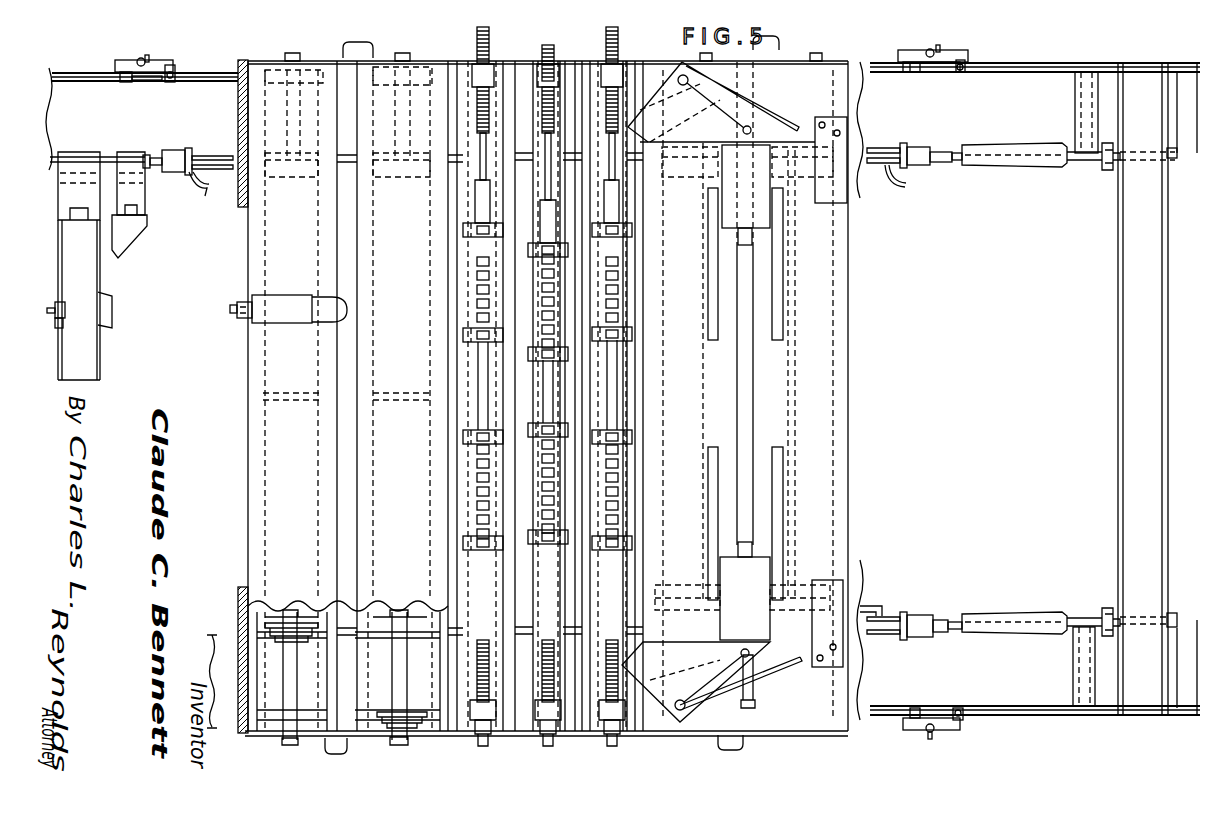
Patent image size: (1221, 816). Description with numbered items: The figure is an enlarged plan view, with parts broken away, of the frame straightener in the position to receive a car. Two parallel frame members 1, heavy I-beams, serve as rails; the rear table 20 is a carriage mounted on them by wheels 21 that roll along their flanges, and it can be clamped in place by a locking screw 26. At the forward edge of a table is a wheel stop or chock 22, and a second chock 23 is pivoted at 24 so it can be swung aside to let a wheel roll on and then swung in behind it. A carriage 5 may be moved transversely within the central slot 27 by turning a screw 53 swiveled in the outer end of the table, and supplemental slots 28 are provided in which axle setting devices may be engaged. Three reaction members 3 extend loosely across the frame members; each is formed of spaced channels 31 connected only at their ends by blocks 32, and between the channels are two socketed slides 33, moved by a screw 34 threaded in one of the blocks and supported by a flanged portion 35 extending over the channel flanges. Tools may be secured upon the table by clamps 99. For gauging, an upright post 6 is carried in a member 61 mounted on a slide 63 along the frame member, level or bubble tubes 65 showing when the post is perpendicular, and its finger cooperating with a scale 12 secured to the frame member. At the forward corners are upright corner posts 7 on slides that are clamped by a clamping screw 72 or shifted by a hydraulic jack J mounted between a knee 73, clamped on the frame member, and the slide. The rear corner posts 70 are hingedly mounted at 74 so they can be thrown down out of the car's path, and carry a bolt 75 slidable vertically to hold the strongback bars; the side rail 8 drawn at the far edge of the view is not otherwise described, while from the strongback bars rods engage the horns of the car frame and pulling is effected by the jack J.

The frame member 1 is at (60, 96).
The reaction member 3 is at (455, 367).
The carriage 5 is at (760, 211).
The upright post 6 is at (142, 58).
The corner post 7 is at (1078, 161).
The side rail 8 is at (1122, 471).
The scale 12 is at (1058, 70).
The rear table 20 is at (360, 370).
The wheel 21 is at (306, 192).
The wheel stop or chock 22 is at (848, 186).
The second chock 23 is at (652, 76).
The pivot 24 is at (742, 131).
The locking screw 26 is at (358, 48).
The central slot 27 is at (345, 441).
The supplemental slot 28 is at (778, 293).
The channel 31 is at (505, 400).
The block 32 is at (556, 62).
The socketed slide 33 is at (472, 281).
The screw 34 is at (492, 48).
The flanged portion 35 is at (465, 336).
The screw 53 is at (753, 702).
The member 61 is at (123, 63).
The slide 63 is at (140, 78).
The level or bubble tube 65 is at (160, 60).
The rear corner post 70 is at (82, 270).
The clamping screw 72 is at (198, 186).
The knee 73 is at (210, 159).
The hinge 74 is at (82, 169).
The bolt 75 is at (58, 300).
The clamp 99 is at (286, 314).
The hydraulic jack J is at (170, 152).